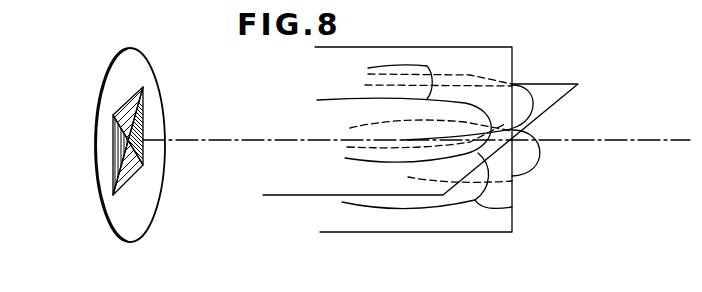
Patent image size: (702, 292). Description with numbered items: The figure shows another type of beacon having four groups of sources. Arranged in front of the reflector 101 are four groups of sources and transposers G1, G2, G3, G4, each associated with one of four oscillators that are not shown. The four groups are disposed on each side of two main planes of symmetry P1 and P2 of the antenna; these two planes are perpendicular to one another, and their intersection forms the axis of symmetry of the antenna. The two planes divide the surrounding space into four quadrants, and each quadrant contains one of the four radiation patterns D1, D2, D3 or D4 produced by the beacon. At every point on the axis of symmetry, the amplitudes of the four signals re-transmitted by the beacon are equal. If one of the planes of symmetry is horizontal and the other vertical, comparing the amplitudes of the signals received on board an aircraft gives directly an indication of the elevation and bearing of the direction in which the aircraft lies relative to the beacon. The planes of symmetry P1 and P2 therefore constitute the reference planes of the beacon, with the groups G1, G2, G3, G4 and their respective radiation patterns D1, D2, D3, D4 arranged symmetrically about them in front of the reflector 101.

The reflector 101 is at (150, 62).
The first group of sources and transposers G1 is at (137, 112).
The second group of sources and transposers G2 is at (145, 162).
The third group of sources and transposers G3 is at (113, 163).
The fourth group of sources and transposers G4 is at (115, 130).
The first main plane of symmetry P1 is at (488, 60).
The second main plane of symmetry P2 is at (556, 90).
The first radiation pattern D1 is at (512, 205).
The second radiation pattern D2 is at (424, 80).
The third radiation pattern D3 is at (533, 100).
The fourth radiation pattern D4 is at (541, 160).